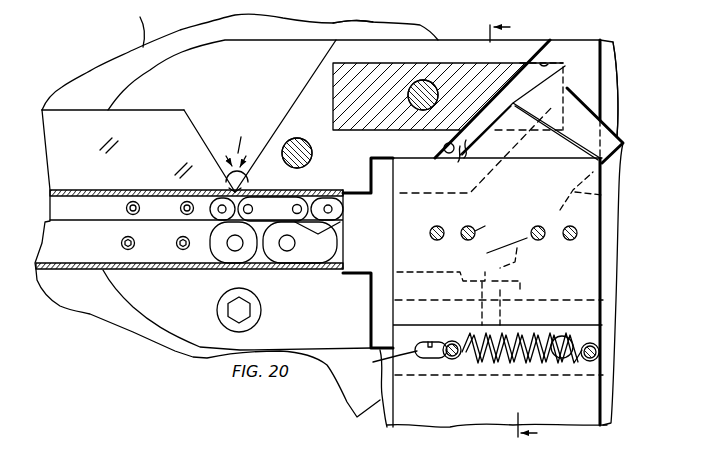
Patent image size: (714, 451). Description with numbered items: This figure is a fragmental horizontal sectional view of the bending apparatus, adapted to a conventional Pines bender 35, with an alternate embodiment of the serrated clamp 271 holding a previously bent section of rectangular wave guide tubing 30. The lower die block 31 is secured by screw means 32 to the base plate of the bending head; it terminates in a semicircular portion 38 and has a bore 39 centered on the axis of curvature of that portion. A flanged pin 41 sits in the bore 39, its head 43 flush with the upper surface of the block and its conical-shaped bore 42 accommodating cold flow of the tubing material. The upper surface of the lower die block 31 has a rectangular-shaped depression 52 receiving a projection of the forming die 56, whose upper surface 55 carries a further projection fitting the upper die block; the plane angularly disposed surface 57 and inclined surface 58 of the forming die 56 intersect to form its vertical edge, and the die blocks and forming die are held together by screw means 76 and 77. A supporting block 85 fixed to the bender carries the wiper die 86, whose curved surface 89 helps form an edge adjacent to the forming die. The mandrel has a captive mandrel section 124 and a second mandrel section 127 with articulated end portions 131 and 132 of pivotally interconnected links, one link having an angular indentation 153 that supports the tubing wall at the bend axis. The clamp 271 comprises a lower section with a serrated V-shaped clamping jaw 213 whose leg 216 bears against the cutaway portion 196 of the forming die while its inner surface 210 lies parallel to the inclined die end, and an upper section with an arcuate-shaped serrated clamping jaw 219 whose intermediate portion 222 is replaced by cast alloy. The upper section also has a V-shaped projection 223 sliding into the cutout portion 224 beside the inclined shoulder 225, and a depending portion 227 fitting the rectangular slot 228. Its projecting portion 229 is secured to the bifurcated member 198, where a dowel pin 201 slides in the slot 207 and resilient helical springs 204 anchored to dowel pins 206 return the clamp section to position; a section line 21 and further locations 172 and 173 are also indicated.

The section line 21 is at (526, 229).
The rectangular wave guide tubing 30 is at (83, 273).
The lower die block 31 is at (224, 36).
The screw means 32 is at (262, 309).
The Pines bender 35 is at (72, 70).
The semicircular portion 38 is at (120, 98).
The bore 39 is at (249, 180).
The flanged pin 41 is at (242, 136).
The conical-shaped bore 42 is at (221, 152).
The head 43 is at (251, 152).
The rectangular-shaped depression 52 is at (553, 65).
The upper surface 55 is at (473, 20).
The forming die 56 is at (377, 13).
The plane angularly disposed surface 57 is at (290, 106).
The inclined surface 58 is at (273, 209).
The screw means 76 is at (312, 141).
The screw means 77 is at (420, 81).
The supporting block 85 is at (130, 27).
The wiper die 86 is at (198, 117).
The curved surface 89 is at (210, 201).
The captive mandrel section 124 is at (98, 203).
The mandrel section 127 is at (204, 270).
The articulated end portion 131 is at (326, 188).
The articulated end portion 132 is at (296, 264).
The angular indentation 153 is at (233, 191).
The holes 172 is at (561, 227).
The hole 173 is at (438, 241).
The cutaway portion 196 is at (409, 163).
The bifurcated member 198 is at (603, 392).
The dowel pin 201 is at (454, 360).
The resilient helical springs 204 is at (560, 342).
The dowel pins 206 is at (600, 353).
The slot 207 is at (430, 343).
The inner surface 210 is at (464, 158).
The V-shaped clamping jaw 213 is at (489, 171).
The leg 216 is at (425, 158).
The arcuate-shaped serrated clamping jaw 219 is at (609, 193).
The intermediate portion 222 is at (518, 263).
The V-shaped projection 223 is at (595, 115).
The cutout portion 224 is at (520, 88).
The inclined shoulder 225 is at (446, 146).
The depending portion 227 is at (518, 317).
The rectangular slot 228 is at (528, 284).
The projecting portion 229 is at (380, 362).
The serrated clamp 271 is at (643, 92).